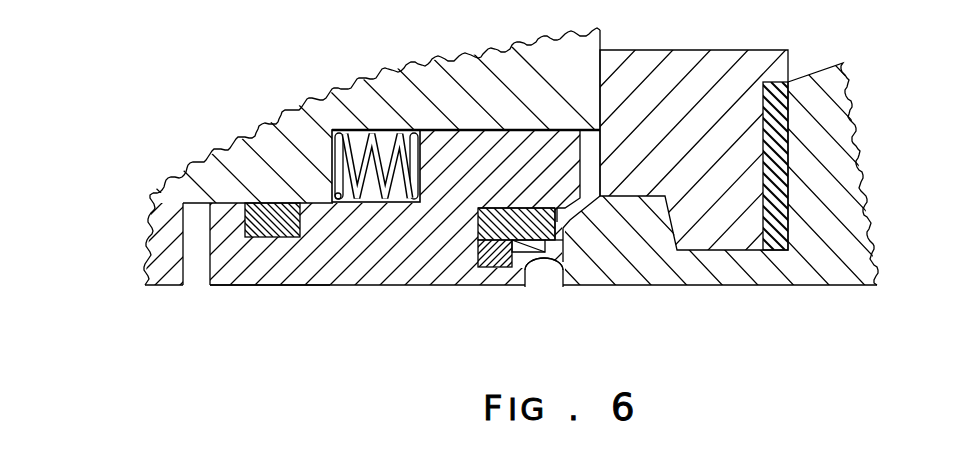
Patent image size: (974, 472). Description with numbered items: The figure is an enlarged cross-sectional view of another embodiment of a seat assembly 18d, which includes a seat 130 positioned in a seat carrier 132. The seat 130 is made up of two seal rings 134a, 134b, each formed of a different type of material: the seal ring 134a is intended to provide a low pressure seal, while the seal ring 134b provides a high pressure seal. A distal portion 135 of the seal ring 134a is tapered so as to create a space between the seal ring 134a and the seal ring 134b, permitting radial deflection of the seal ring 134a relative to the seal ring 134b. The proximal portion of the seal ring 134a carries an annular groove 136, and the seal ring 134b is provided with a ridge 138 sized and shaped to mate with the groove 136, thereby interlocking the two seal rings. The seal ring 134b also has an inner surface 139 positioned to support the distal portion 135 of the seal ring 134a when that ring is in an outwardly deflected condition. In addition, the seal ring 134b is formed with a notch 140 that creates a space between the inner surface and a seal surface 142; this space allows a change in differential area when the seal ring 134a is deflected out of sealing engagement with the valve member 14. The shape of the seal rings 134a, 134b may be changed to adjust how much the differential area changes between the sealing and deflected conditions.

The valve member 14 is at (853, 120).
The seat assembly 18d is at (243, 290).
The seat carrier 132 is at (338, 287).
The annular groove 136 is at (480, 265).
The ridge 138 is at (503, 207).
The inner surface 139 is at (530, 207).
The seat 130 is at (486, 268).
The seal ring 134a is at (515, 268).
The seal ring 134b is at (570, 240).
The seal surface 142 is at (555, 248).
The notch 140 is at (560, 258).
The distal portion 135 is at (542, 270).